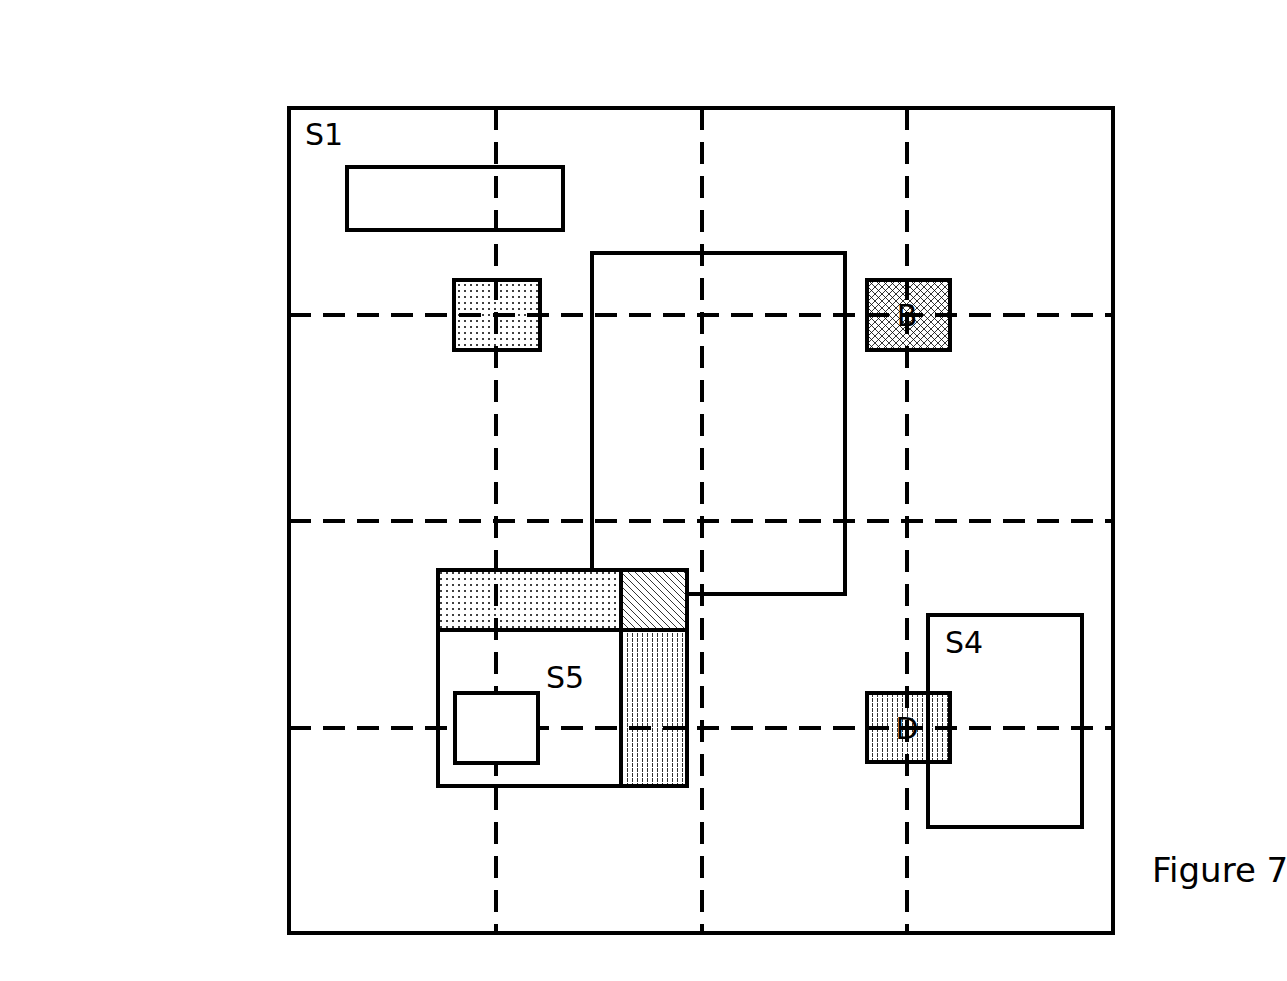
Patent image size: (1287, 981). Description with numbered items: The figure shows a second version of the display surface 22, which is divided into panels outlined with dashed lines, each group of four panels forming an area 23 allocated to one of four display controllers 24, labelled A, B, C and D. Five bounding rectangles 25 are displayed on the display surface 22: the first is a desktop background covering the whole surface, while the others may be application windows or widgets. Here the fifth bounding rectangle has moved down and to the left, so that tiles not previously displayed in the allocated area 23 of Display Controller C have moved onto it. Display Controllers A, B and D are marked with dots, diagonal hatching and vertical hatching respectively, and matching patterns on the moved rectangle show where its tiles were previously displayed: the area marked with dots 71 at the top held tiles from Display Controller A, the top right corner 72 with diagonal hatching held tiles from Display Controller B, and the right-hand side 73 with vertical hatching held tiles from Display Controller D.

The display surface 22 is at (1113, 95).
The area allocated to a display controller 23 is at (1140, 108).
The display controller 24 is at (455, 728).
The bounding rectangle 25 is at (592, 423).
The area marked with dots 71 is at (438, 600).
The top right corner 72 is at (617, 603).
The right-hand side 73 is at (640, 786).